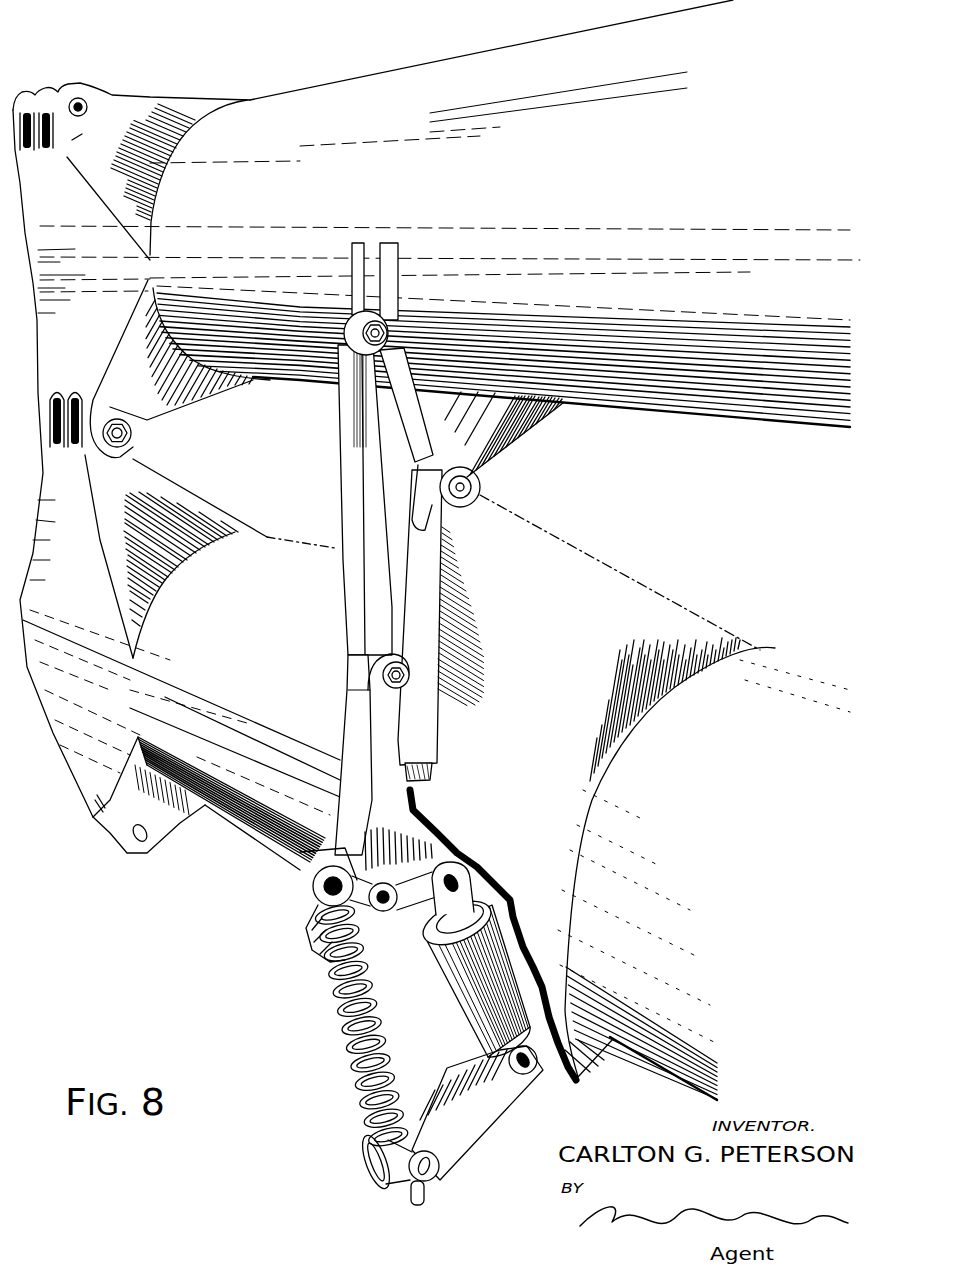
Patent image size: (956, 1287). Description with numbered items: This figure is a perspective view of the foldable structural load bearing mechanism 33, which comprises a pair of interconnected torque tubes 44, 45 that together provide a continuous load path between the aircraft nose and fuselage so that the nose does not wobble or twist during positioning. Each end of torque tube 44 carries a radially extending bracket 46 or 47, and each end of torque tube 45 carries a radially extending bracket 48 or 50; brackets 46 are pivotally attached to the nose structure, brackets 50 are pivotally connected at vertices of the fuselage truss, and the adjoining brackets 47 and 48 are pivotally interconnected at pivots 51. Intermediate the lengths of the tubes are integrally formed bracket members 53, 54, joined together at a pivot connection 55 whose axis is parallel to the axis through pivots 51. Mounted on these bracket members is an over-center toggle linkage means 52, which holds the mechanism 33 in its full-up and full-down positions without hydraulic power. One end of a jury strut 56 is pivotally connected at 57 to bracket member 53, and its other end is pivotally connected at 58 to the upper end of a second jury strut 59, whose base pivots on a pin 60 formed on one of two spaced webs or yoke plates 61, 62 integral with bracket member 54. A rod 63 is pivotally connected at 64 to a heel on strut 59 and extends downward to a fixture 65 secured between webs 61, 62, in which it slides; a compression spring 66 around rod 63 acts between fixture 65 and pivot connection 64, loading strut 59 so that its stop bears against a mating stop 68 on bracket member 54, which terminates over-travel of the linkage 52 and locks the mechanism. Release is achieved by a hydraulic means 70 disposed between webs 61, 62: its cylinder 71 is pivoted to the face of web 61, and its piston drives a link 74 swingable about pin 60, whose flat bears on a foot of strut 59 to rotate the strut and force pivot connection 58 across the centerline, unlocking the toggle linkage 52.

The load bearing mechanism 33 is at (155, 868).
The torque tube 44 is at (348, 82).
The torque tube 45 is at (263, 845).
The bracket 46 is at (168, 98).
The bracket 47 is at (215, 405).
The bracket 48 is at (203, 492).
The bracket 50 is at (88, 822).
The pivot 51 is at (135, 437).
The over-center toggle linkage means 52 is at (313, 927).
The bracket member 53 is at (545, 428).
The bracket member 54 is at (612, 568).
The pivot connection 55 is at (482, 486).
The jury strut 56 is at (329, 433).
The pivot connection 57 is at (380, 332).
The pivot connection 58 is at (400, 678).
The jury strut 59 is at (346, 722).
The pin 60 is at (393, 914).
The web 61 is at (478, 1100).
The web 62 is at (596, 1065).
The rod 63 is at (418, 1210).
The pivot connection 64 is at (313, 908).
The fixture 65 is at (437, 1182).
The compression spring 66 is at (350, 1022).
The stop 68 is at (435, 793).
The hydraulic means 70 is at (434, 970).
The cylinder 71 is at (471, 1035).
The link 74 is at (433, 915).